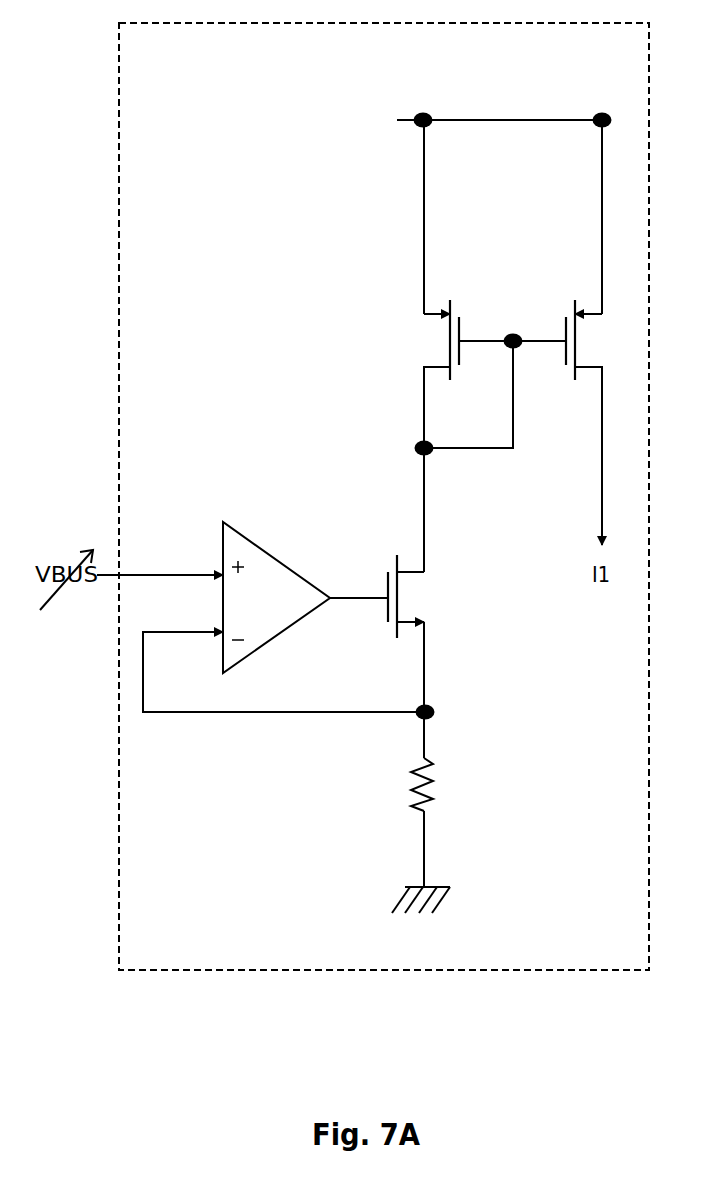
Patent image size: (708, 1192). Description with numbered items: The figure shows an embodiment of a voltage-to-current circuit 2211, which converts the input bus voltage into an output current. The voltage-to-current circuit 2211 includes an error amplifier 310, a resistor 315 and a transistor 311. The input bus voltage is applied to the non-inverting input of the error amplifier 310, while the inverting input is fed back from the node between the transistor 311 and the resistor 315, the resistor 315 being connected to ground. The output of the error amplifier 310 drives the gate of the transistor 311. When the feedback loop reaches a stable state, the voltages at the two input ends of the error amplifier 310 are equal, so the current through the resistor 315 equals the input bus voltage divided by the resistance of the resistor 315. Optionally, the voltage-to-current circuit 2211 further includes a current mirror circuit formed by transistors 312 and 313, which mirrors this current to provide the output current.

The error amplifier 310 is at (264, 550).
The transistor 311 is at (387, 633).
The transistor 312 is at (456, 374).
The transistor 313 is at (572, 422).
The resistor 315 is at (444, 799).
The voltage-to-current circuit 2211 is at (563, 938).